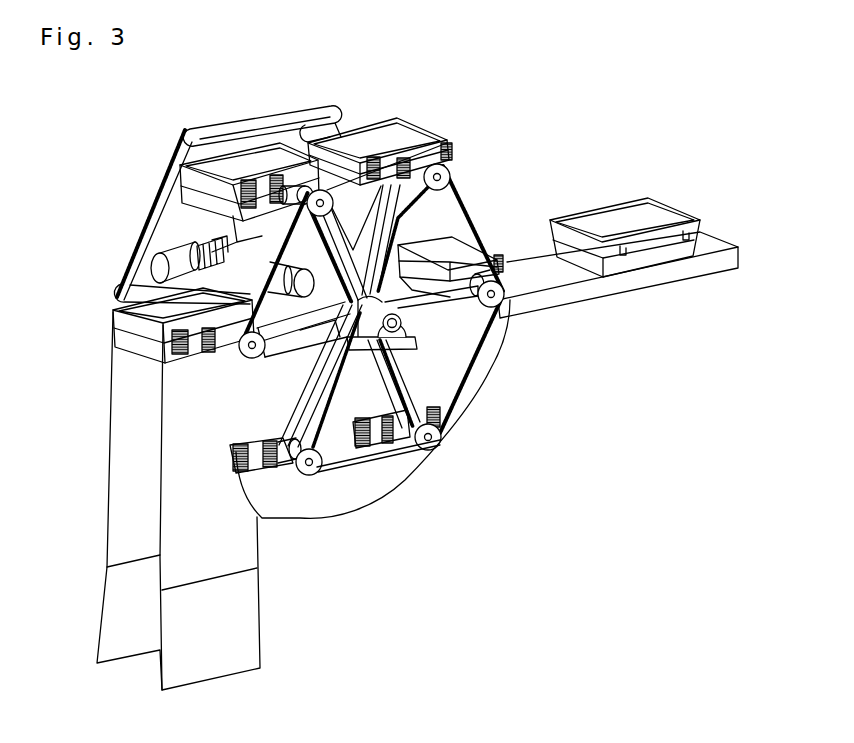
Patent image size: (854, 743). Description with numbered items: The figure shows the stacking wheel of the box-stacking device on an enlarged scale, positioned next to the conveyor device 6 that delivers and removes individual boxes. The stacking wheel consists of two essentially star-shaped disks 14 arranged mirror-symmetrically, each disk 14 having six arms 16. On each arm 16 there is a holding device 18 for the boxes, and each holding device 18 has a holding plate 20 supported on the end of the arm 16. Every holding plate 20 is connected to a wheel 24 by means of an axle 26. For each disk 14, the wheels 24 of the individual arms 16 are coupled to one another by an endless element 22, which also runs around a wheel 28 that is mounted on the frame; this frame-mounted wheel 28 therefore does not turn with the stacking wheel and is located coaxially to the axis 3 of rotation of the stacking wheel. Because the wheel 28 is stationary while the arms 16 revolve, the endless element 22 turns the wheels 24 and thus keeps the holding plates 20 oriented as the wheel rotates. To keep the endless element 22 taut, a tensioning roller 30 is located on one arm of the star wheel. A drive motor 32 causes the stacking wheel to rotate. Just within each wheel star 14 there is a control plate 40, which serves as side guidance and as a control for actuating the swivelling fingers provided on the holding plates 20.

The axis of rotation 3 is at (410, 330).
The conveyor device 6 is at (538, 290).
The star-shaped disk 14 is at (372, 254).
The arm 16 is at (163, 292).
The holding device 18 is at (358, 113).
The holding plate 20 is at (385, 160).
The endless element 22 is at (457, 403).
The wheel 24 is at (430, 450).
The axle 26 is at (323, 477).
The frame-mounted wheel 28 is at (452, 237).
The tensioning roller 30 is at (297, 365).
The drive motor 32 is at (163, 262).
The control plate 40 is at (120, 405).